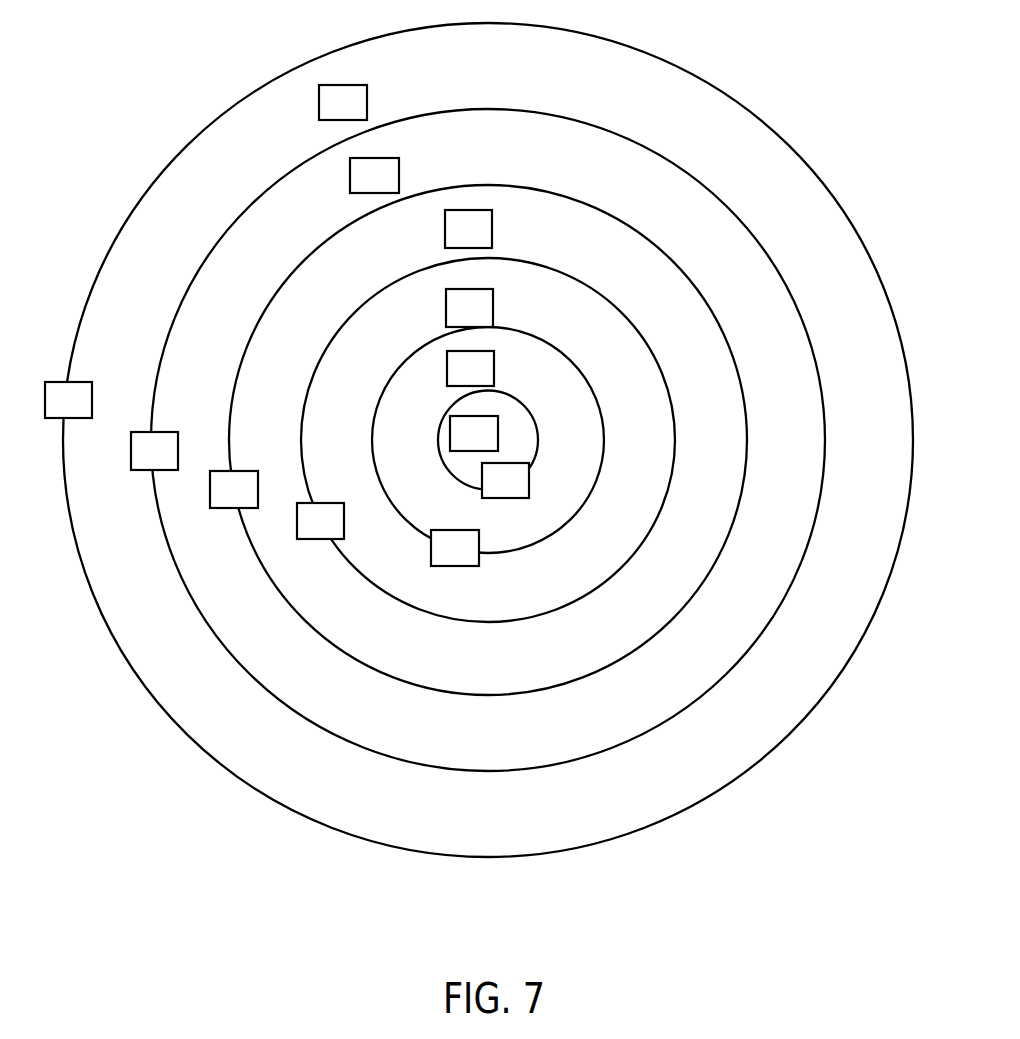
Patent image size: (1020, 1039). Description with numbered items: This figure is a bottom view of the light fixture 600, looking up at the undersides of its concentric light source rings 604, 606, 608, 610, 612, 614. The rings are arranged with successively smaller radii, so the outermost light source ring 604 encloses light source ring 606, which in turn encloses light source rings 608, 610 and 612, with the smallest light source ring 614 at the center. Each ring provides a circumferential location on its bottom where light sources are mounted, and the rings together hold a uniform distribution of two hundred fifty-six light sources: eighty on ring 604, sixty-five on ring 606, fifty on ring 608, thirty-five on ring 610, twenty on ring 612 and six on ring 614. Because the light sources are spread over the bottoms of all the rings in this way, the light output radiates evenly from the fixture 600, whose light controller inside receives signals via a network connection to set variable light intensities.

The fixture 600 is at (201, 806).
The light source ring 604 is at (797, 203).
The light source ring 606 is at (731, 259).
The light source ring 608 is at (669, 307).
The light source ring 610 is at (618, 355).
The light source ring 612 is at (568, 393).
The light source ring 614 is at (537, 445).